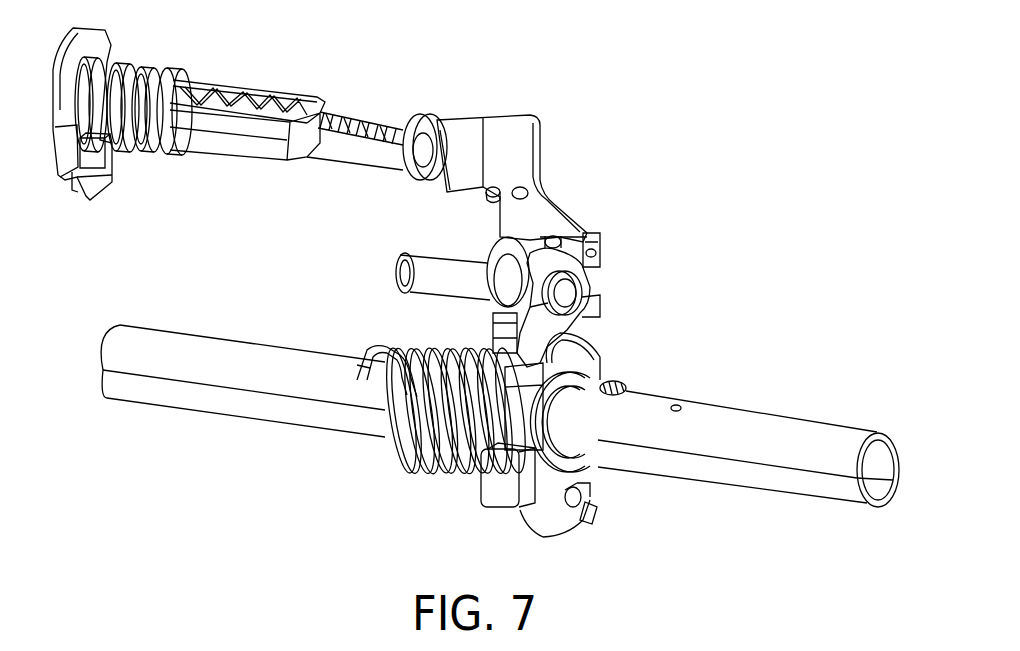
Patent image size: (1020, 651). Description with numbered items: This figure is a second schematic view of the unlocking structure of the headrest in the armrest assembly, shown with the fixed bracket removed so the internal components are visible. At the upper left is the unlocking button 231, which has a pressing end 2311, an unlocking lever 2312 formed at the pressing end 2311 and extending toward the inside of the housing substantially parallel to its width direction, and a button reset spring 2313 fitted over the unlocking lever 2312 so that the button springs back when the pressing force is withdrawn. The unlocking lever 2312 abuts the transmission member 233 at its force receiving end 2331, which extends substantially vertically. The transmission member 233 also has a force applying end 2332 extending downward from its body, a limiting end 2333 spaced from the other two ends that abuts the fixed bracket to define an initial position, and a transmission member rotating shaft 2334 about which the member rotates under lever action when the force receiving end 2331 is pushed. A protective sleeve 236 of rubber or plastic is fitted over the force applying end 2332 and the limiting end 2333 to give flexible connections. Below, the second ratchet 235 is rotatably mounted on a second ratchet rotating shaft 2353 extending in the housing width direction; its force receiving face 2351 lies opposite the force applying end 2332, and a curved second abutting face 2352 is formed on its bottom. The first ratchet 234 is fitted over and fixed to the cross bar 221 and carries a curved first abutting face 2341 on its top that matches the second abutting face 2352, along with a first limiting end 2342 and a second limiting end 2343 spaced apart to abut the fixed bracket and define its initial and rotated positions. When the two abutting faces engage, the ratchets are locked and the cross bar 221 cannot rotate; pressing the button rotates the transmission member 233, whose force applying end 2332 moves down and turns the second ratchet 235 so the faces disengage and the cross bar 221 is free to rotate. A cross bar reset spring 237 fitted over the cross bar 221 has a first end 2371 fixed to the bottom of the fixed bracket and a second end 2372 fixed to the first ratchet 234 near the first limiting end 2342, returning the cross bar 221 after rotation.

The cross bar 221 is at (293, 388).
The unlocking button 231 is at (233, 140).
The pressing end 2311 is at (103, 34).
The unlocking lever 2312 is at (337, 132).
The button reset spring 2313 is at (183, 70).
The transmission member 233 is at (523, 163).
The force receiving end 2331 is at (457, 137).
The force applying end 2332 is at (600, 260).
The limiting end 2333 is at (487, 195).
The transmission member rotating shaft 2334 is at (515, 240).
The first ratchet 234 is at (543, 517).
The first abutting face 2341 is at (600, 358).
The first limiting end 2342 is at (594, 512).
The second limiting end 2343 is at (527, 503).
The second ratchet 235 is at (563, 260).
The force receiving face 2351 is at (585, 293).
The second abutting face 2352 is at (590, 338).
The second ratchet rotating shaft 2353 is at (397, 263).
The protective sleeve 236 is at (593, 237).
The cross bar reset spring 237 is at (437, 443).
The first end 2371 is at (367, 365).
The second end 2372 is at (590, 500).